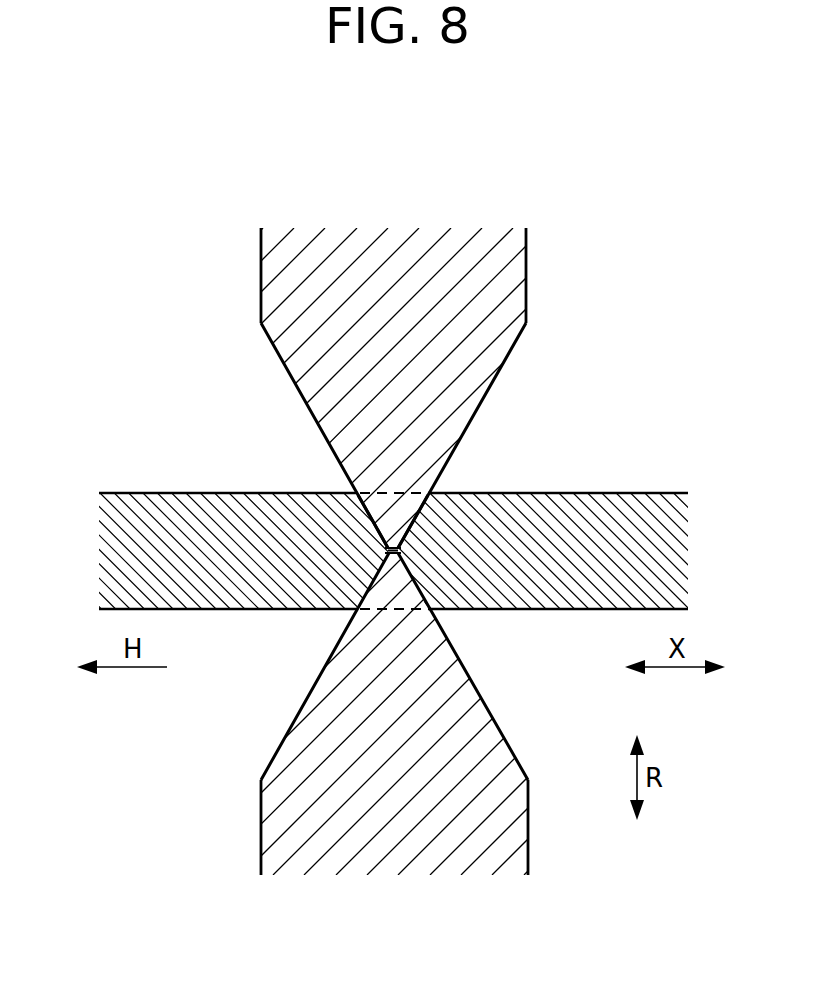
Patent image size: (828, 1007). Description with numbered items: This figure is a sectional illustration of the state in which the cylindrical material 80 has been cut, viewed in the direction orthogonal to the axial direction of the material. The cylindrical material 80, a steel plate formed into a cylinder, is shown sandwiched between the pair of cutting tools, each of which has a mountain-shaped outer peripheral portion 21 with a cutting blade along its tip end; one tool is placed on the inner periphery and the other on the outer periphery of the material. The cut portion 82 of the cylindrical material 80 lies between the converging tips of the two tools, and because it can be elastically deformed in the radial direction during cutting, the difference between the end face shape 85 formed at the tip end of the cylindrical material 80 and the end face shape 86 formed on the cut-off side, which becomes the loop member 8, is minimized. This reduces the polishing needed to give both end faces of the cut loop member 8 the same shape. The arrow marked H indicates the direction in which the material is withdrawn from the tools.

The loop member 8 is at (622, 537).
The cylindrical material 80 is at (148, 498).
The outer peripheral portion 21 is at (276, 355).
The end face shape 85 is at (378, 500).
The end face shape 86 is at (405, 500).
The cut portion 82 is at (388, 553).